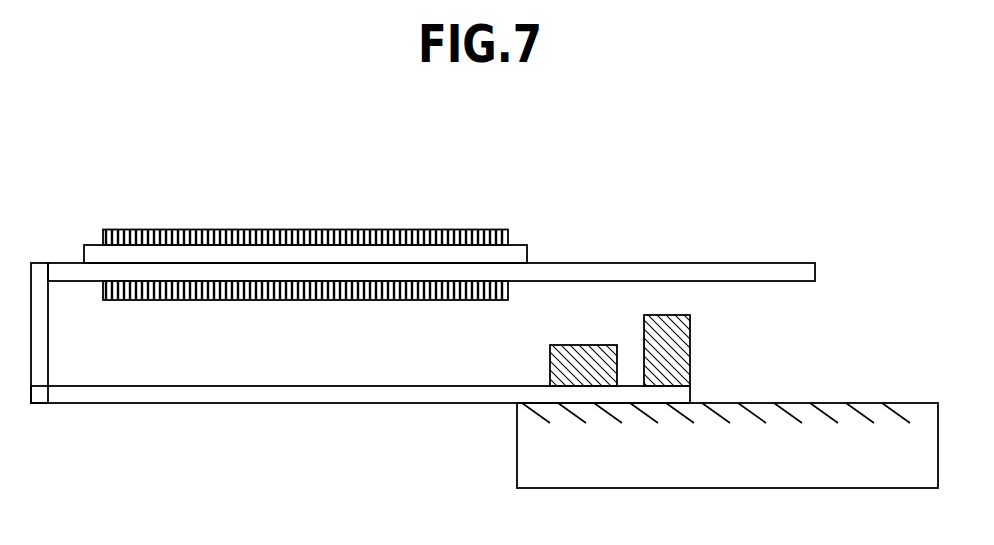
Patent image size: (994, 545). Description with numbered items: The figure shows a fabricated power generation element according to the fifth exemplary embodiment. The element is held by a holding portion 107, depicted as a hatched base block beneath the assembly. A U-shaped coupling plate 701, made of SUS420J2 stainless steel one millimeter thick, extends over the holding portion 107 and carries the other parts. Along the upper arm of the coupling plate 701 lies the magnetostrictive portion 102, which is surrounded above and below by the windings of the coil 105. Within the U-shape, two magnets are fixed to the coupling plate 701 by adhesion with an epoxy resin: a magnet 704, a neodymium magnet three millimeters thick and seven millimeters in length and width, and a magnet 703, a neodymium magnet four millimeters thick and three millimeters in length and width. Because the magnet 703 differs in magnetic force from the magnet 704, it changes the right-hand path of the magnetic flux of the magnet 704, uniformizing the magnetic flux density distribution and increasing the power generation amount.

The coupling plate 701 is at (707, 272).
The magnetostrictive portion 102 is at (513, 243).
The coil 105 is at (406, 228).
The magnet 704 is at (552, 368).
The magnet 703 is at (690, 350).
The holding portion 107 is at (921, 412).